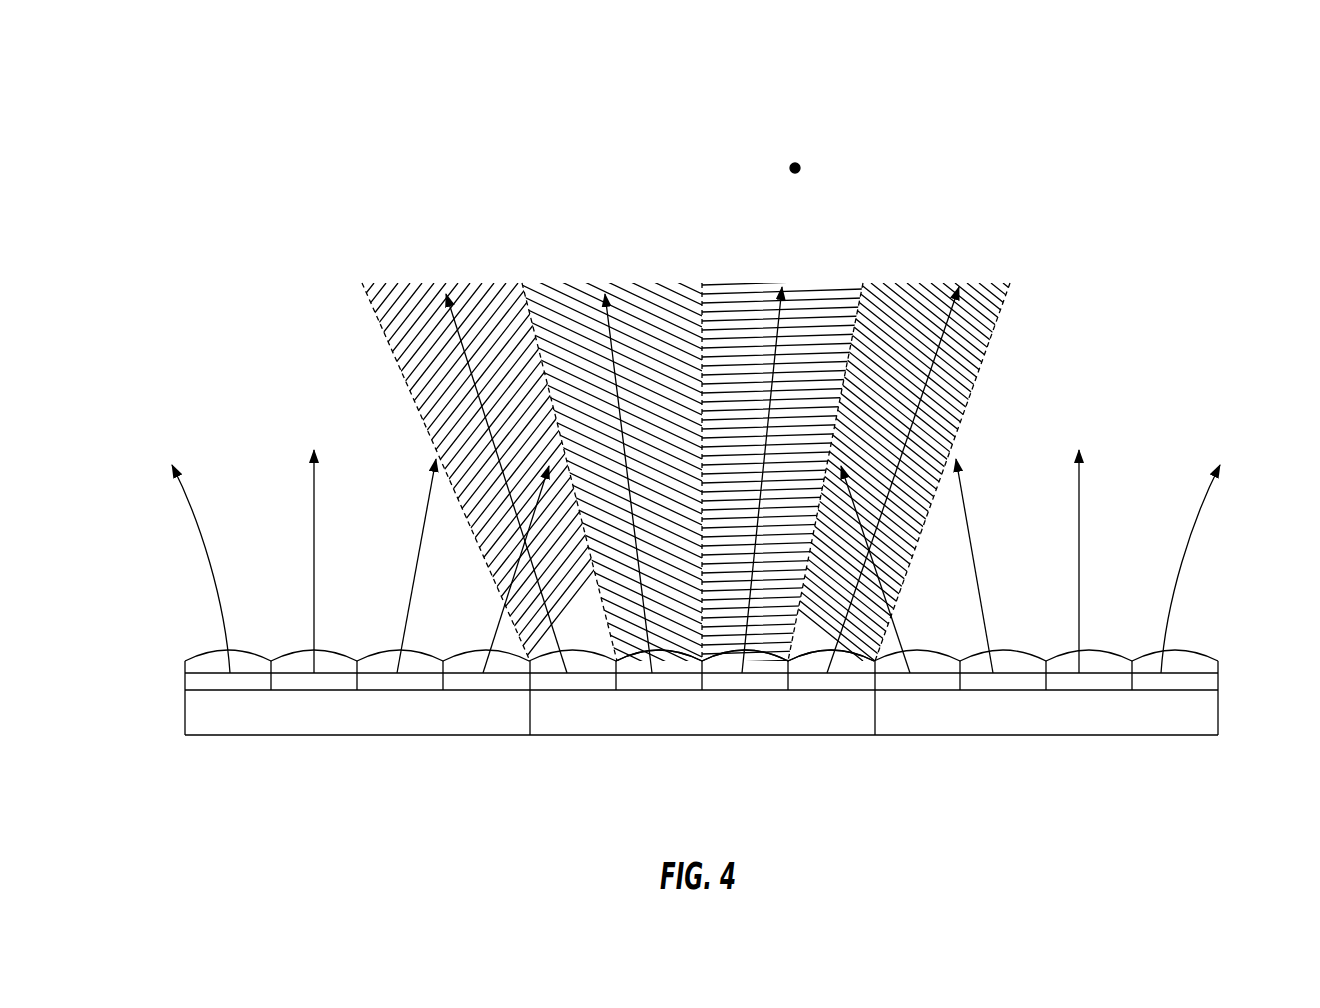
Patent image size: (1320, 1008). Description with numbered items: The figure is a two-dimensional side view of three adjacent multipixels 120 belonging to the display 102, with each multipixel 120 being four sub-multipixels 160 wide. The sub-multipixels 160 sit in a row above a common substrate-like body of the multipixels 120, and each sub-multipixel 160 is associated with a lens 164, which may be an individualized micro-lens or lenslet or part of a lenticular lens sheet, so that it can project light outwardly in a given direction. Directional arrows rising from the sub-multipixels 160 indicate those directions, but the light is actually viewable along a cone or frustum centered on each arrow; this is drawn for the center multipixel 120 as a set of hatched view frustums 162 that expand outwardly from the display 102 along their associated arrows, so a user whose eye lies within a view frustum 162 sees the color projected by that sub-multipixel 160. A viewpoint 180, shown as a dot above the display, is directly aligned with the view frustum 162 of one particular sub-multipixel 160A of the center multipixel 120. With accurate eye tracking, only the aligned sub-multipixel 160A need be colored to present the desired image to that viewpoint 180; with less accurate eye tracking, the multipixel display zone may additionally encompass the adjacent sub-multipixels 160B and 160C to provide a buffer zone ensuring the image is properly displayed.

The display 102 is at (1198, 166).
The multipixel 120 is at (368, 740).
The sub-multipixel 160 is at (243, 683).
The aligned sub-multipixel 160A is at (748, 683).
The adjacent sub-multipixel 160B is at (848, 683).
The adjacent sub-multipixel 160C is at (668, 683).
The view frustum 162 is at (387, 305).
The lens 164 is at (205, 648).
The viewpoint 180 is at (795, 160).